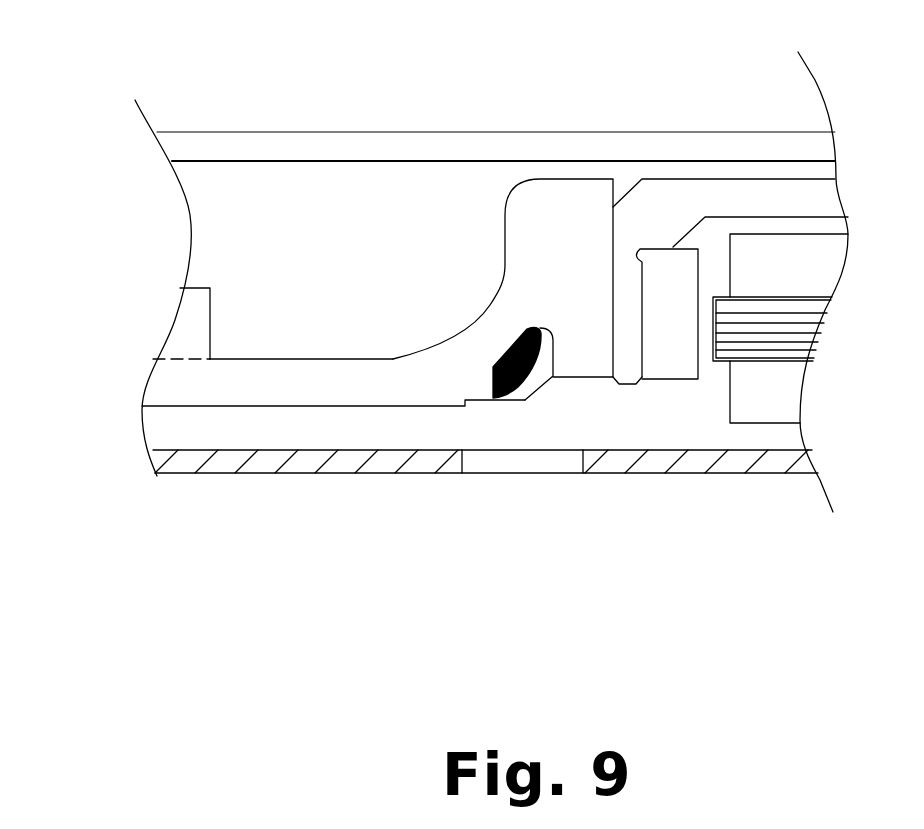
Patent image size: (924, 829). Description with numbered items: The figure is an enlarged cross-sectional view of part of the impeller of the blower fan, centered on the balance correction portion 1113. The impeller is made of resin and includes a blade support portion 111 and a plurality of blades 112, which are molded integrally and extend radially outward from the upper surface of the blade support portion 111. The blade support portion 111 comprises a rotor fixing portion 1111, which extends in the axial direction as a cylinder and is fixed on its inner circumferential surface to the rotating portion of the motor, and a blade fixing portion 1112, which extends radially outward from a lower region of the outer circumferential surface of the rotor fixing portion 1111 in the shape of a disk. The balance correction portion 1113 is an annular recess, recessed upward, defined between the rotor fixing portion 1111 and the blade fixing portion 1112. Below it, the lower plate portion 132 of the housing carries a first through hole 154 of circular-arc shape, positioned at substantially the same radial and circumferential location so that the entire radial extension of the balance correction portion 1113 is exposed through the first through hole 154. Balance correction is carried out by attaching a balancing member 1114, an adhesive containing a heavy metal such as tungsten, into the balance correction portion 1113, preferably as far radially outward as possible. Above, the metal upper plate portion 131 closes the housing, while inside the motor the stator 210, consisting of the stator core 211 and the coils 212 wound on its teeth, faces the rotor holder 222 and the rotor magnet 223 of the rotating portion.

The blade support portion 111 is at (291, 650).
The blades 112 is at (198, 337).
The upper plate portion 131 is at (423, 147).
The lower plate portion 132 is at (393, 463).
The first through hole 154 is at (483, 470).
The stator 210 is at (810, 232).
The stator core 211 is at (777, 262).
The coils 212 is at (773, 322).
The rotor holder 222 is at (703, 193).
The rotor magnet 223 is at (688, 343).
The rotor fixing portion 1111 is at (183, 390).
The blade fixing portion 1112 is at (585, 278).
The balance correction portion 1113 is at (525, 398).
The balancing member 1114 is at (537, 368).